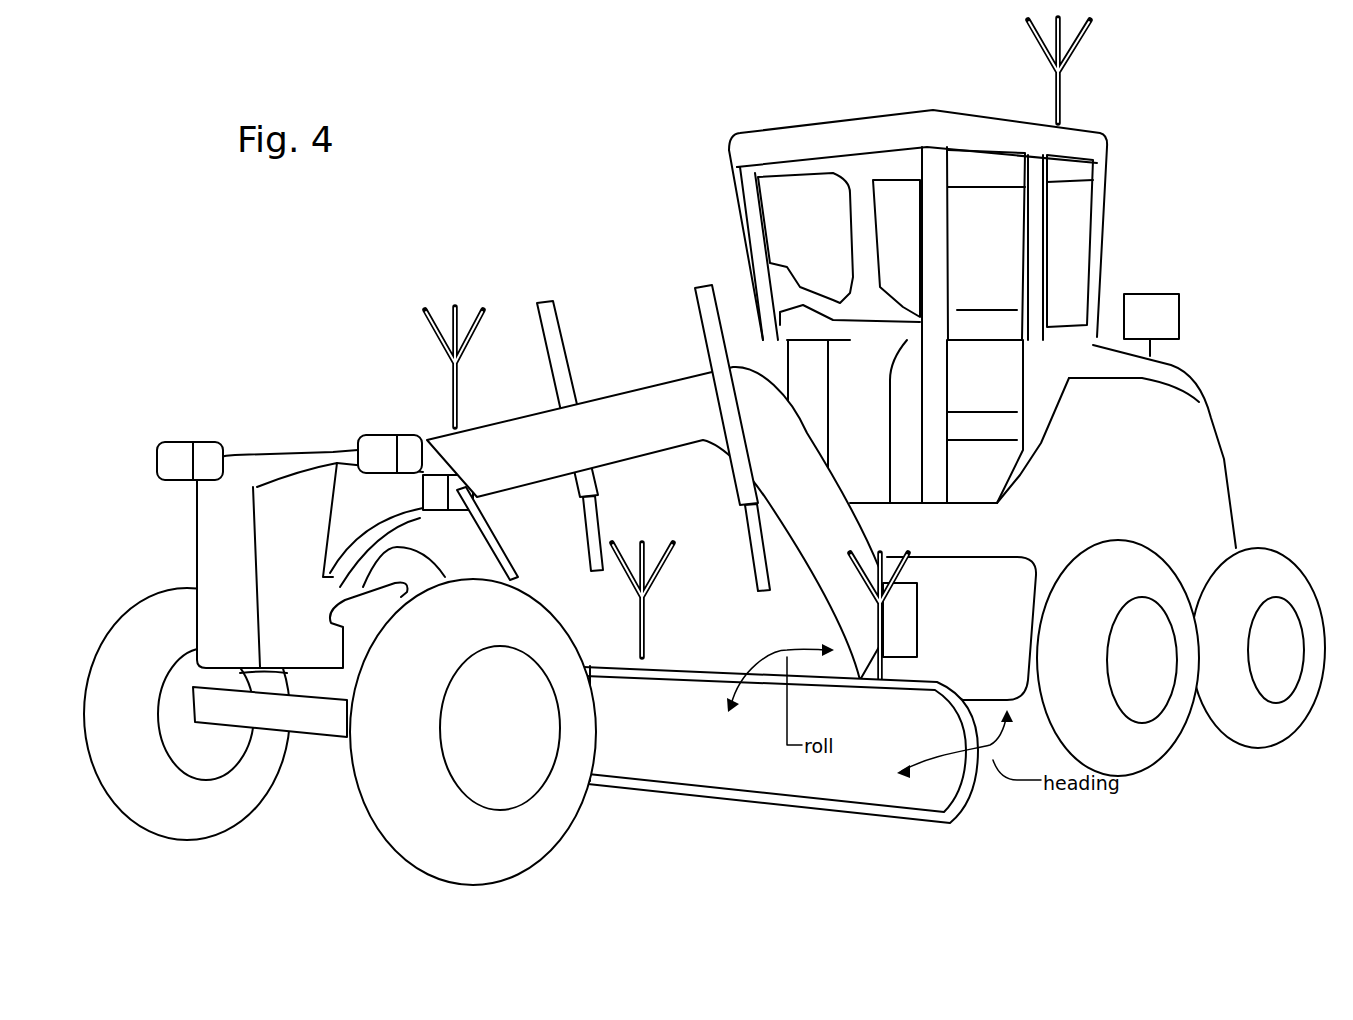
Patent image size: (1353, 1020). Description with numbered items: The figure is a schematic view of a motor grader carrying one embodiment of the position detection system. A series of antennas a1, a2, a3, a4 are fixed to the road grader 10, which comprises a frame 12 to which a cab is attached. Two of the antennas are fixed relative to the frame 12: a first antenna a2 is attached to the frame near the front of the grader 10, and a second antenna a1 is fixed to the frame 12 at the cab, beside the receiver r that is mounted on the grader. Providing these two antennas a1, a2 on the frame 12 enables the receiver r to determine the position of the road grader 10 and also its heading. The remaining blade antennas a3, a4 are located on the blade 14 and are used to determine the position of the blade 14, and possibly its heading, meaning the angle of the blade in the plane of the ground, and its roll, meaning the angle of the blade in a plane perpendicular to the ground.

The road grader 10 is at (681, 93).
The frame 12 is at (622, 383).
The blade 14 is at (943, 778).
The second antenna a1 is at (1063, 93).
The first antenna a2 is at (455, 305).
The blade antenna a3 is at (648, 628).
The blade antenna a4 is at (883, 623).
The receiver r is at (1179, 319).